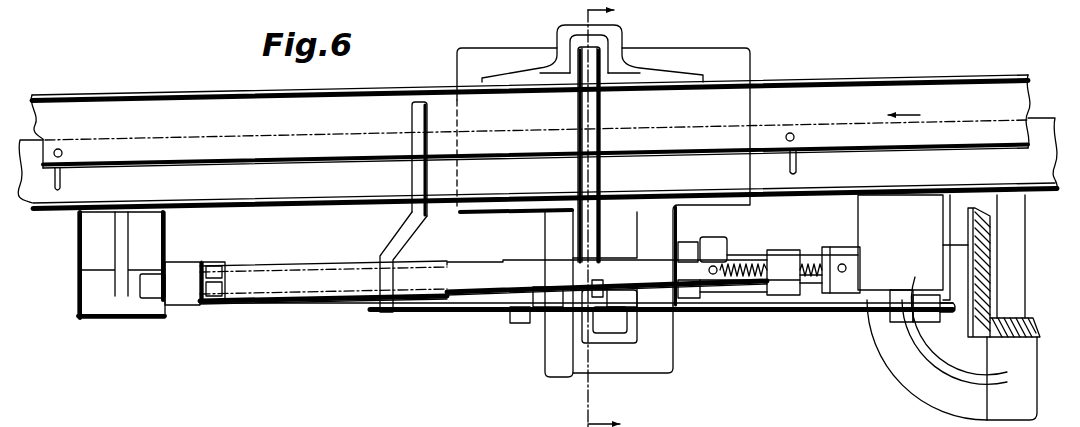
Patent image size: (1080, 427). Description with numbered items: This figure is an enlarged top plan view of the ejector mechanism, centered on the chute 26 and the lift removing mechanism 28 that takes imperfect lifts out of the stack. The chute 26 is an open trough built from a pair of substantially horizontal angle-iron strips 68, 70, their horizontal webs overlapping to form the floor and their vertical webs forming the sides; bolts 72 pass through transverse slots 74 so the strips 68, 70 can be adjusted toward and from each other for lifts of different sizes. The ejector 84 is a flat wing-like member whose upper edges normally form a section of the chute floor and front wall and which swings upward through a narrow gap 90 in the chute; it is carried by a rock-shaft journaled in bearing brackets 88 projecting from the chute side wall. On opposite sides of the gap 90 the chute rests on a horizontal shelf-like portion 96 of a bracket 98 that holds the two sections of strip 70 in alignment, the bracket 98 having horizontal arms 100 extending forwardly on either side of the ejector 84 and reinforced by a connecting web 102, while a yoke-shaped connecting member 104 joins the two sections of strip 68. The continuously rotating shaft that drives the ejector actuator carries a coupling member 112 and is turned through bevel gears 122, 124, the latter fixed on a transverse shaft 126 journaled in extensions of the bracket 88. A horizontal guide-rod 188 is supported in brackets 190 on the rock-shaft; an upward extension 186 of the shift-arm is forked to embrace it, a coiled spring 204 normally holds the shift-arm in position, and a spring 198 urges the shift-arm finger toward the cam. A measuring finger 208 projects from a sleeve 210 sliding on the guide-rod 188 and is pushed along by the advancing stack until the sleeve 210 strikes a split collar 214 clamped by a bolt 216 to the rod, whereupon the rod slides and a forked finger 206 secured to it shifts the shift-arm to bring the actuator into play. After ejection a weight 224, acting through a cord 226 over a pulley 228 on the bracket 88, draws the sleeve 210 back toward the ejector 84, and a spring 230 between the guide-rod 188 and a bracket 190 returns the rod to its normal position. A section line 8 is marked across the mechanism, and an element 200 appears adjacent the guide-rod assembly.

The section line 8 is at (589, 215).
The chute 26 is at (336, 116).
The lift removing mechanism 28 is at (668, 386).
The angle-iron strip 68 is at (91, 109).
The angle-iron strip 70 is at (265, 193).
The bolts 72 is at (62, 149).
The transverse slots 74 is at (63, 186).
The ejector 84 is at (598, 146).
The bearing brackets 88 is at (95, 302).
The gap 90 is at (576, 113).
The horizontal shelf-like portion 96 is at (733, 71).
The bracket 98 is at (590, 362).
The horizontal arms 100 is at (500, 235).
The connecting web 102 is at (621, 373).
The yoke-shaped connecting member 104 is at (624, 31).
The coupling member 112 is at (458, 262).
The bevel gear 122 is at (983, 213).
The bevel gear 124 is at (1009, 337).
The transverse horizontal shaft 126 is at (1013, 226).
The upward extension 186 is at (677, 311).
The guide-rod 188 is at (472, 287).
The brackets 190 is at (184, 303).
The spring 198 is at (595, 283).
The slide bar 200 is at (648, 226).
The coiled spring 204 is at (752, 318).
The finger 206 is at (779, 251).
The measuring finger 208 is at (421, 104).
The sleeve 210 is at (319, 293).
The split collar 214 is at (219, 267).
The bolt 216 is at (214, 302).
The weight 224 is at (958, 323).
The cord 226 is at (412, 304).
The pulley 228 is at (904, 318).
The spring 230 is at (832, 265).